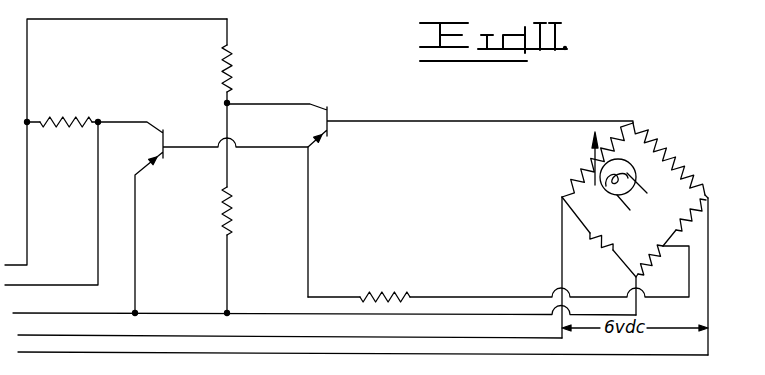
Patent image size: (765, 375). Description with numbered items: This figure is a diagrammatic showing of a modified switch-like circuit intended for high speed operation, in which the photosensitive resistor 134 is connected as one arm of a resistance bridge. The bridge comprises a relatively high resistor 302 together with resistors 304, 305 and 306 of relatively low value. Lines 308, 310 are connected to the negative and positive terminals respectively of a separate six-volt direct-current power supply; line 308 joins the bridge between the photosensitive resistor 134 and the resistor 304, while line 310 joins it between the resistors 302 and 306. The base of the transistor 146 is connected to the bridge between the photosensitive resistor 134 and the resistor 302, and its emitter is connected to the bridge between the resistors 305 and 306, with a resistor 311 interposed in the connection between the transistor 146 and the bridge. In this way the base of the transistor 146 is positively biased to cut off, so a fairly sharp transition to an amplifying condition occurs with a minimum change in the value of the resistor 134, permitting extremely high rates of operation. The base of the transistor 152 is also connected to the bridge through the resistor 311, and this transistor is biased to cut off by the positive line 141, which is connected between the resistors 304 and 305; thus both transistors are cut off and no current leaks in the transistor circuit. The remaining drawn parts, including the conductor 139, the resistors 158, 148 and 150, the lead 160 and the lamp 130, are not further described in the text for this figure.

The supply conductor 139 is at (185, 20).
The resistor 158 is at (48, 120).
The transistor 152 is at (165, 135).
The resistor 148 is at (233, 66).
The transistor 146 is at (330, 112).
The resistor 150 is at (235, 213).
The input lead 160 is at (42, 285).
The positive line 141 is at (148, 312).
The resistor 311 is at (408, 295).
The line 308 is at (512, 337).
The line 310 is at (611, 355).
The photosensitive resistor 134 is at (578, 177).
The lamp 130 is at (608, 189).
The resistor 302 is at (700, 190).
The resistor 306 is at (709, 229).
The resistor 305 is at (659, 246).
The resistor 304 is at (609, 249).